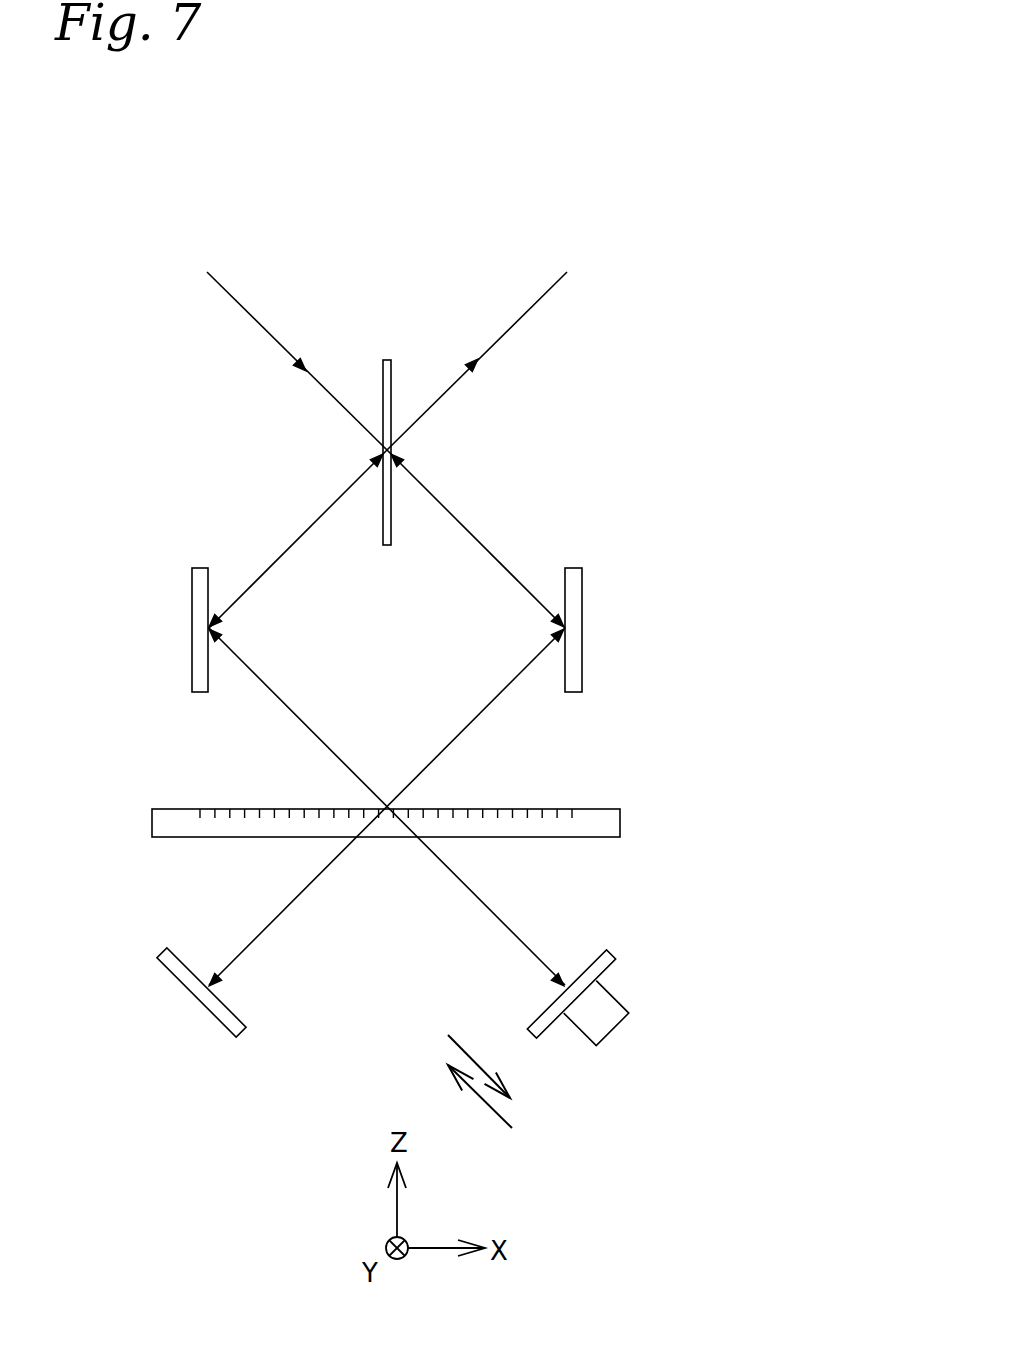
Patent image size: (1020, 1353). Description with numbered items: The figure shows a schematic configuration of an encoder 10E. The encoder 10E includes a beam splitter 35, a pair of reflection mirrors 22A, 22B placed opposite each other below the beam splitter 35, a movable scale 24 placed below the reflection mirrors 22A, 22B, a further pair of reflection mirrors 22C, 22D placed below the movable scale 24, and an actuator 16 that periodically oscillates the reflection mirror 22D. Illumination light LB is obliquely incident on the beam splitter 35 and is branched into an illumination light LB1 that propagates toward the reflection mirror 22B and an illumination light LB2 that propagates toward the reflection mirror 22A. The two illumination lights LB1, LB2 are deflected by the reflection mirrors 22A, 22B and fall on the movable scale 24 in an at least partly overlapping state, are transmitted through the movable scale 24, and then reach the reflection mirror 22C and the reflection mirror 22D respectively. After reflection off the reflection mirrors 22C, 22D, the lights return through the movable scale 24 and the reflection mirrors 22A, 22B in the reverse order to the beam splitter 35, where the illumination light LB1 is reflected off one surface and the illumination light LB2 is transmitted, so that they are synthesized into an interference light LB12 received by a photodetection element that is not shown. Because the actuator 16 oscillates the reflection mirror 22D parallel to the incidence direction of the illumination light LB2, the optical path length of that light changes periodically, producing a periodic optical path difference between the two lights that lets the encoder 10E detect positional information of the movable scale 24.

The encoder 10E is at (790, 95).
The illumination light LB is at (297, 330).
The interference light LB12 is at (477, 330).
The illumination light LB1 is at (476, 538).
The illumination light LB2 is at (298, 538).
The beam splitter 35 is at (407, 407).
The reflection mirror 22A is at (146, 626).
The reflection mirror 22B is at (624, 618).
The reflection mirror 22C is at (164, 1002).
The reflection mirror 22D is at (614, 957).
The movable scale 24 is at (434, 807).
The actuator 16 is at (639, 1000).